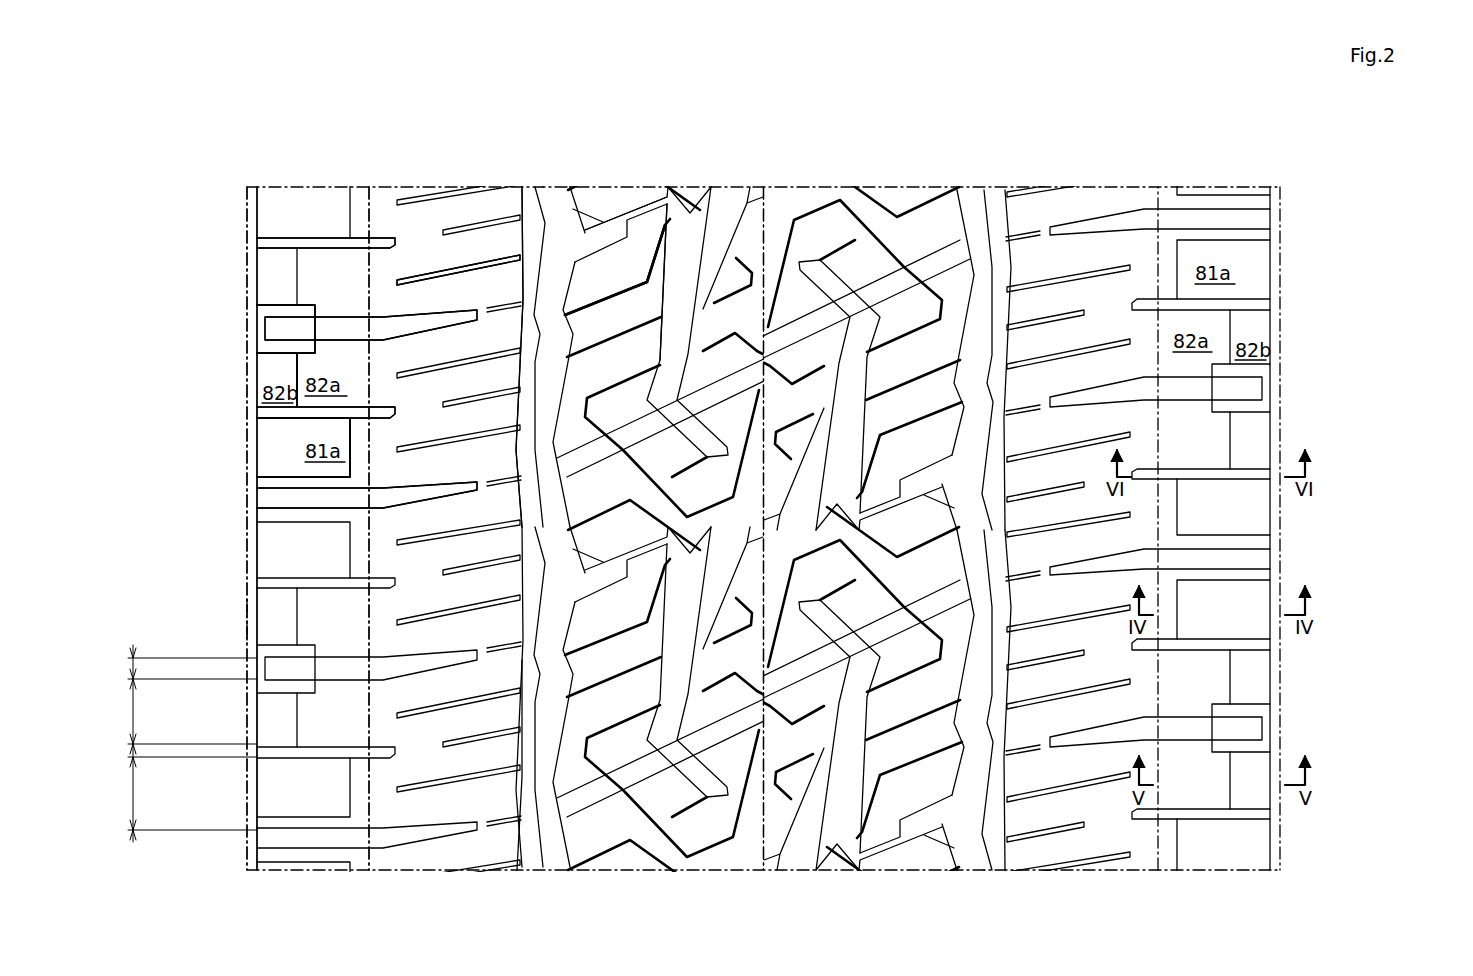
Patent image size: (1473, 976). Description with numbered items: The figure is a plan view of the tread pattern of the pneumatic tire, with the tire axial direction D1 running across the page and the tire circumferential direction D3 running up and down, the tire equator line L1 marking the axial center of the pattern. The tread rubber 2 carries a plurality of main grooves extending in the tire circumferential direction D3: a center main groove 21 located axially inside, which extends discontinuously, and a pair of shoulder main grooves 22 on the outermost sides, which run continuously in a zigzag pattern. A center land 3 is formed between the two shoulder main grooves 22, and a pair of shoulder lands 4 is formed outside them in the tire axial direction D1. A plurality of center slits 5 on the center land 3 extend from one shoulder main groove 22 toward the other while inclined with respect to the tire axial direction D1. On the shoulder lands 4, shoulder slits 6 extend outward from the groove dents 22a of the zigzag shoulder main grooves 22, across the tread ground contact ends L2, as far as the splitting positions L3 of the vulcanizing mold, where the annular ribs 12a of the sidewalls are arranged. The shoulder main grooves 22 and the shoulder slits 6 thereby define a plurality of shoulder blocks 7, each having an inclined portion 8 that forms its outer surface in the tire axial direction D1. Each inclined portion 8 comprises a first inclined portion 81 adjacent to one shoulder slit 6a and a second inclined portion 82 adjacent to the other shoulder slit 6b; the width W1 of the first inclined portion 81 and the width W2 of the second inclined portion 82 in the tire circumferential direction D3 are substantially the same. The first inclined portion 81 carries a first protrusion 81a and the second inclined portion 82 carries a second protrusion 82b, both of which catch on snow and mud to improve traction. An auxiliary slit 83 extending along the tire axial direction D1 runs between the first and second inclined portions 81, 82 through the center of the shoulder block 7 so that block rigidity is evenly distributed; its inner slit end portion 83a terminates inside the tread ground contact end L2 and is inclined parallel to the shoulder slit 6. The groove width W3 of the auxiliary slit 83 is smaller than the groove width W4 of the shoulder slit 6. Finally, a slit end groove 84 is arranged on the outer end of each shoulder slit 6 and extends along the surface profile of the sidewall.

The tread rubber 2 is at (914, 150).
The center land 3 is at (557, 185).
The shoulder land 4 is at (401, 185).
The center slit 5 is at (620, 185).
The shoulder slit 6 is at (286, 329).
The shoulder slit 6a is at (260, 490).
The shoulder slit 6b is at (265, 322).
The shoulder block 7 is at (463, 187).
The inclined portion 8 is at (285, 185).
The annular rib 12a is at (247, 620).
The center main groove 21 is at (752, 185).
The shoulder main groove 22 is at (548, 187).
The groove dent 22a is at (1023, 187).
The first inclined portion 81 is at (255, 215).
The first protrusion 81a is at (303, 447).
The second inclined portion 82 is at (255, 272).
The second protrusion 82b is at (277, 380).
The auxiliary slit 83 is at (255, 245).
The slit end portion 83a is at (350, 230).
The slit end groove 84 is at (265, 345).
The tire equator line L1 is at (790, 187).
The tread ground contact end L2 is at (369, 187).
The splitting position L3 is at (247, 187).
The width of the first inclined portion W1 is at (130, 797).
The width of the second inclined portion W2 is at (130, 720).
The groove width of the auxiliary slit W3 is at (130, 758).
The groove width of the shoulder slit W4 is at (130, 668).
The tire axial direction D1 is at (830, 915).
The tire circumferential direction D3 is at (1405, 432).